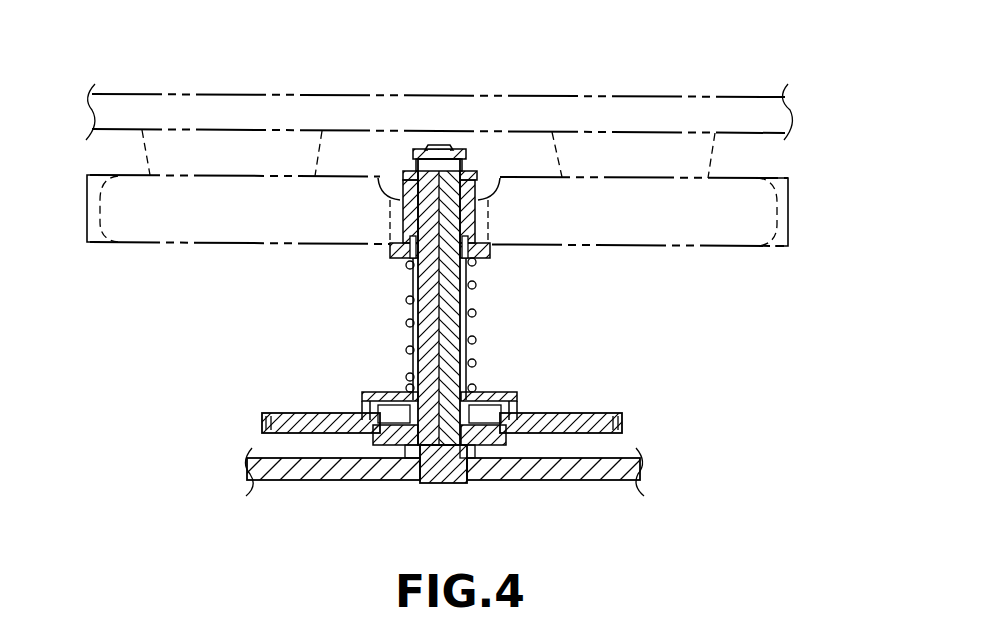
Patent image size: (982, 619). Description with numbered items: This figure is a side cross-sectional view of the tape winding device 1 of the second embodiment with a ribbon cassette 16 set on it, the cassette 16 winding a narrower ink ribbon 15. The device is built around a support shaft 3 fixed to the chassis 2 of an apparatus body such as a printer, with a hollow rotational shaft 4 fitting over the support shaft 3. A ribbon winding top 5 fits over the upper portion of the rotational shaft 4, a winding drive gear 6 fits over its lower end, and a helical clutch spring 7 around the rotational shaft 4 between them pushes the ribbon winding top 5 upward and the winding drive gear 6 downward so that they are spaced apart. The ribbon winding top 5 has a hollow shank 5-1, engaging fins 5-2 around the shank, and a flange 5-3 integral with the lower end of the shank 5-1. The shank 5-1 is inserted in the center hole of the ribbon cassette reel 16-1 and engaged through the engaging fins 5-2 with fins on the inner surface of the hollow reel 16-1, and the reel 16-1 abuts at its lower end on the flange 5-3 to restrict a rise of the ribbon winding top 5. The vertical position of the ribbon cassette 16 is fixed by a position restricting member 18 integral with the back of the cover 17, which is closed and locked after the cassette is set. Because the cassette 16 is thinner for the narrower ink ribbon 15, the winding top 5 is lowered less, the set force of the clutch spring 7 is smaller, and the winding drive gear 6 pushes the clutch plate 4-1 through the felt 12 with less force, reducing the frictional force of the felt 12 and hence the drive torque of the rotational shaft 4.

The tape winding device 1 is at (572, 280).
The chassis 2 is at (310, 470).
The support shaft 3 is at (440, 337).
The rotational shaft 4 is at (463, 352).
The clutch plate 4-1 is at (497, 462).
The ribbon winding top 5 is at (393, 266).
The shank 5-1 is at (396, 205).
The engaging fins 5-2 is at (484, 208).
The flange 5-3 is at (399, 257).
The winding drive gear 6 is at (574, 412).
The clutch spring 7 is at (470, 313).
The felt 12 is at (372, 410).
The ink ribbon 15 is at (753, 211).
The ribbon cassette 16 is at (790, 242).
The ribbon cassette reel 16-1 is at (487, 197).
The cover 17 is at (718, 113).
The position restricting member 18 is at (695, 155).